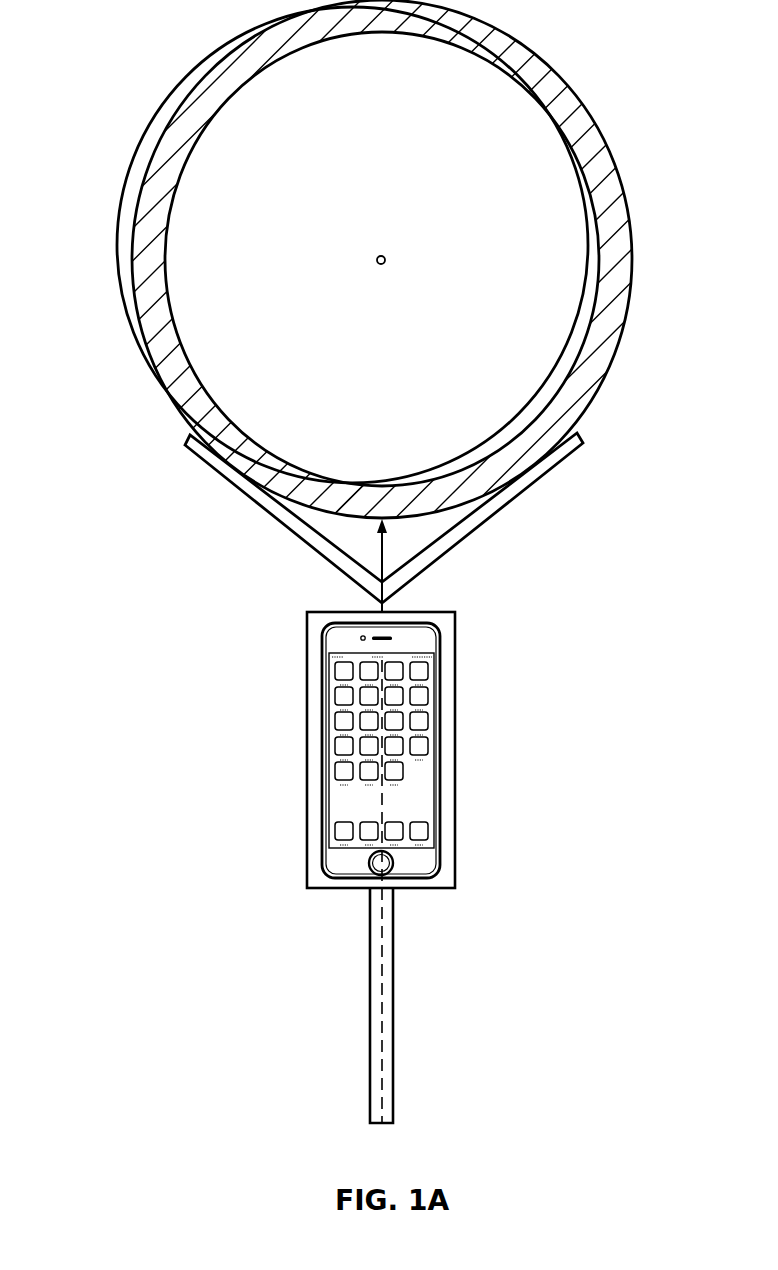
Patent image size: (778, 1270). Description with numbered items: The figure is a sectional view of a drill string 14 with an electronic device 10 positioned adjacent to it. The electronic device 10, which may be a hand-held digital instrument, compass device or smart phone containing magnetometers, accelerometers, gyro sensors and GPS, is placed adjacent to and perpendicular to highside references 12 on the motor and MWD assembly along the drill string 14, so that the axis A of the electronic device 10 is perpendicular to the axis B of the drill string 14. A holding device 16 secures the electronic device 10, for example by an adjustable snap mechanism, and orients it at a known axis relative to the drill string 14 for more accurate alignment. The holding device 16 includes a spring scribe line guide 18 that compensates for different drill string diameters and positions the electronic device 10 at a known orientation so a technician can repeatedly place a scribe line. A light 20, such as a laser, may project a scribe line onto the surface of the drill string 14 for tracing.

The electronic device 10 is at (442, 740).
The highside references 12 is at (351, 527).
The drill string 14 is at (127, 188).
The holding device 16 is at (307, 823).
The spring scribe line guide 18 is at (470, 533).
The light 20 is at (383, 553).
The axis of electronic device A is at (382, 793).
The axis of drill string B is at (386, 258).